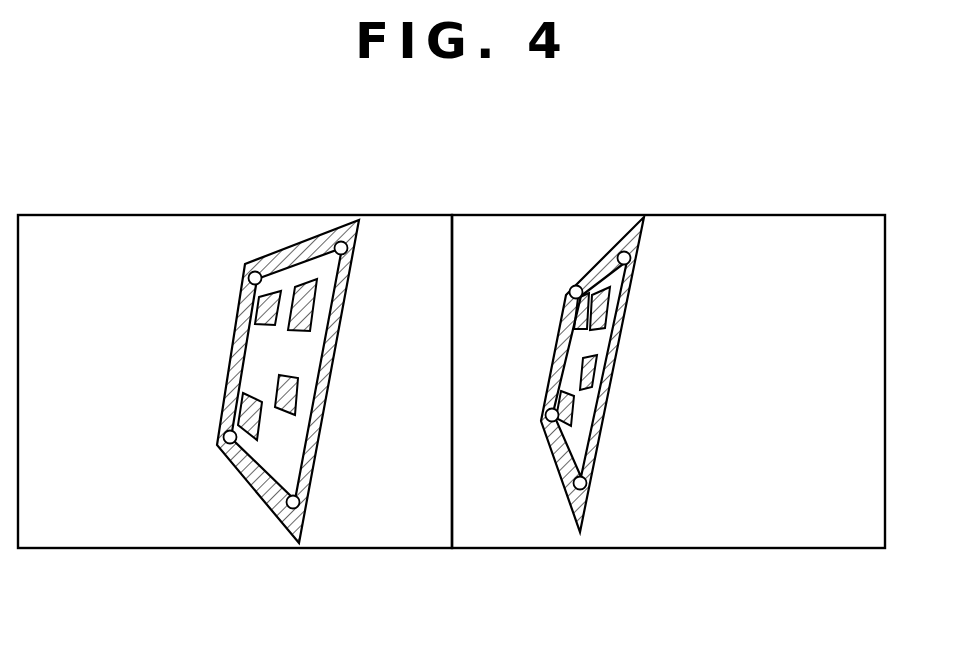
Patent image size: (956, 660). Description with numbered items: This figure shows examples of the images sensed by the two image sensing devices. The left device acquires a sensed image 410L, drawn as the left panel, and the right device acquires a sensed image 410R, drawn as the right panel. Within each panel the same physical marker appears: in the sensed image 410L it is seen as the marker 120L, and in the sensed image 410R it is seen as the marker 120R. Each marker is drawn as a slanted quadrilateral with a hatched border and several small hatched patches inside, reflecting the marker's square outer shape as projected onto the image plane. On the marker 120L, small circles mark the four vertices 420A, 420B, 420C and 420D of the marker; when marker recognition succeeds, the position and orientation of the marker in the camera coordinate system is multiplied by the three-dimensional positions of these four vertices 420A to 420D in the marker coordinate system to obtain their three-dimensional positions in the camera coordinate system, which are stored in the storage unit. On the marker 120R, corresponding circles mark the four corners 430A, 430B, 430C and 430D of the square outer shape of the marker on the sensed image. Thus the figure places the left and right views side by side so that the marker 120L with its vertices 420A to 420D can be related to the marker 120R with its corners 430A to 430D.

The sensed image 410L is at (245, 550).
The sensed image 410R is at (758, 550).
The marker 120L is at (336, 378).
The marker 120R is at (612, 397).
The vertex 420A is at (248, 276).
The vertex 420B is at (348, 251).
The vertex 420C is at (300, 506).
The vertex 420D is at (224, 434).
The corner 430A is at (570, 290).
The corner 430B is at (630, 255).
The corner 430C is at (587, 487).
The corner 430D is at (547, 413).